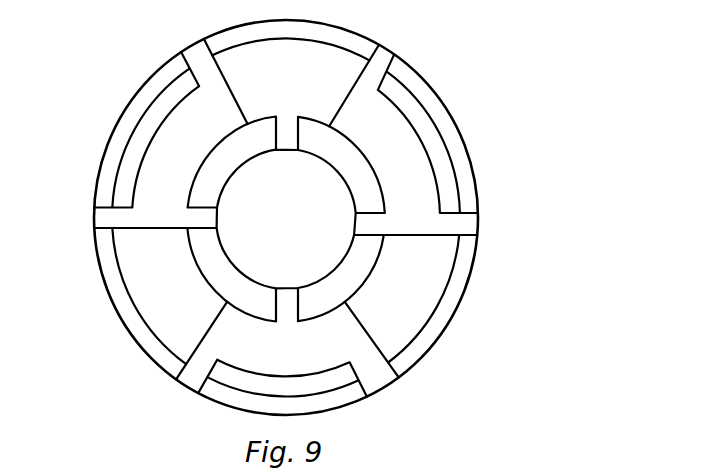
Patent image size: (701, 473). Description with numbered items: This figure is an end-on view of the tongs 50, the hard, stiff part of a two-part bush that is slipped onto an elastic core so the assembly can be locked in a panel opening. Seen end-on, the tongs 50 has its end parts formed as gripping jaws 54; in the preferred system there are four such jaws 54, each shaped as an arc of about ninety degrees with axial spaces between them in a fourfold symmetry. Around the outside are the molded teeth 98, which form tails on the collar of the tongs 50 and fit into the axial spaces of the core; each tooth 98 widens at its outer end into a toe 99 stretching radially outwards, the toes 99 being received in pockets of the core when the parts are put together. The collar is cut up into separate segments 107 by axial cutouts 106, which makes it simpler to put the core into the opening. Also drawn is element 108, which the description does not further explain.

The tongs 50 is at (458, 66).
The jaws 54 is at (212, 172).
The teeth 98 is at (482, 183).
The toe 99 is at (438, 154).
The axial cutouts 106 is at (463, 228).
The segments 107 is at (457, 299).
The slot 108 is at (202, 217).